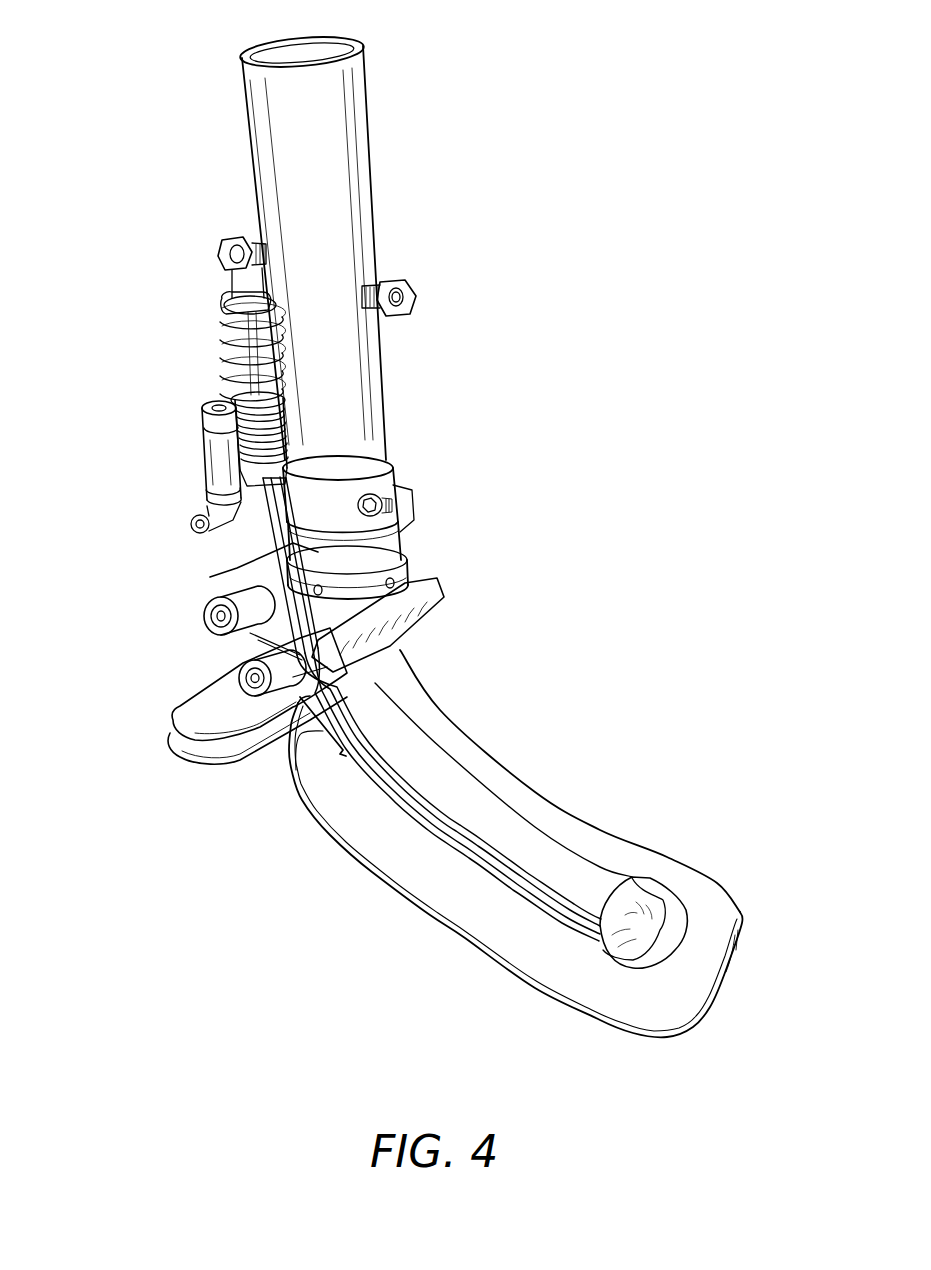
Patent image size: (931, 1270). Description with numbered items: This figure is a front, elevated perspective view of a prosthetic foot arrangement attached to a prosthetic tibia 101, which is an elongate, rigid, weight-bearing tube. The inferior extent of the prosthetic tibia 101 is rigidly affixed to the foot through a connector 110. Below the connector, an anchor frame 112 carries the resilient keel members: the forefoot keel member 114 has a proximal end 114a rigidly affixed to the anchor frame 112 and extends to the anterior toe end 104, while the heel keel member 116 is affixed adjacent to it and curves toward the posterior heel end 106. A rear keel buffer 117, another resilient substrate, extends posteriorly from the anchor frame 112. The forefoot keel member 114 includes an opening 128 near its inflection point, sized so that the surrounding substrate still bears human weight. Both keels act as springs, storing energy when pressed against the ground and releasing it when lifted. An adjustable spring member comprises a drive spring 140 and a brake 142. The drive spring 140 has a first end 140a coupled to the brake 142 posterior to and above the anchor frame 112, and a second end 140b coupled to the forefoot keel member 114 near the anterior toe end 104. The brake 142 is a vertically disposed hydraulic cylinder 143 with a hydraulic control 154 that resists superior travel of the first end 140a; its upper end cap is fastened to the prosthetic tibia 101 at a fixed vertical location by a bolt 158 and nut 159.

The prosthetic tibia 101 is at (366, 112).
The bolt 158 is at (237, 240).
The nut 159 is at (414, 296).
The brake 142 is at (182, 350).
The hydraulic cylinder 143 is at (240, 400).
The hydraulic control 154 is at (202, 456).
The connector 110 is at (405, 537).
The first end 140a is at (244, 544).
The anchor frame 112 is at (438, 590).
The posterior heel end 106 is at (123, 726).
The rear keel buffer 117 is at (205, 702).
The heel keel member 116 is at (188, 762).
The opening 128 is at (300, 748).
The forefoot keel member 114 is at (634, 856).
The anterior toe end 104 is at (751, 849).
The proximal end 114a is at (727, 957).
The drive spring 140 is at (480, 796).
The second end 140b is at (607, 907).